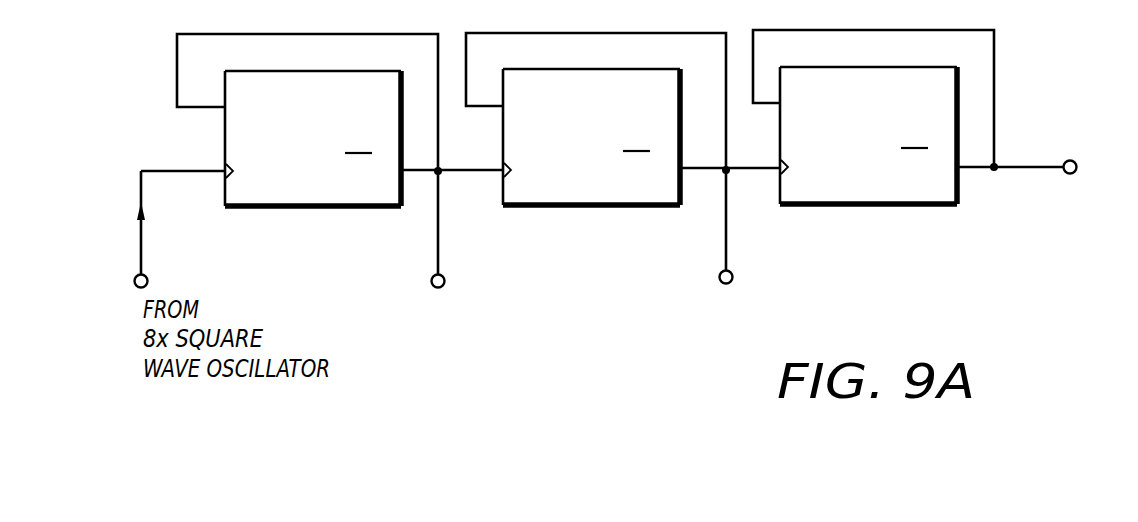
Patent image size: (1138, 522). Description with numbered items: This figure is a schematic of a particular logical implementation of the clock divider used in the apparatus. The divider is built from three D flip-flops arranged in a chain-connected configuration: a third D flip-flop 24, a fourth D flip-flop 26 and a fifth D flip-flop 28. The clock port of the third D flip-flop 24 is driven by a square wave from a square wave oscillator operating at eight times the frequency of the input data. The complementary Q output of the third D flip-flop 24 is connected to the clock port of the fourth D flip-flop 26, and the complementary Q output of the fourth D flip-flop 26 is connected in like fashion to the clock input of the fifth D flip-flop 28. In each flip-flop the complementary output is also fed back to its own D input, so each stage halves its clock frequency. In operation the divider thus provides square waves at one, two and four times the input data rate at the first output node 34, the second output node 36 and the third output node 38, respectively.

The third D flip-flop 24 is at (309, 154).
The fourth D flip-flop 26 is at (598, 151).
The fifth D flip-flop 28 is at (875, 143).
The first output node 34 is at (1043, 142).
The second output node 36 is at (749, 306).
The third output node 38 is at (466, 310).